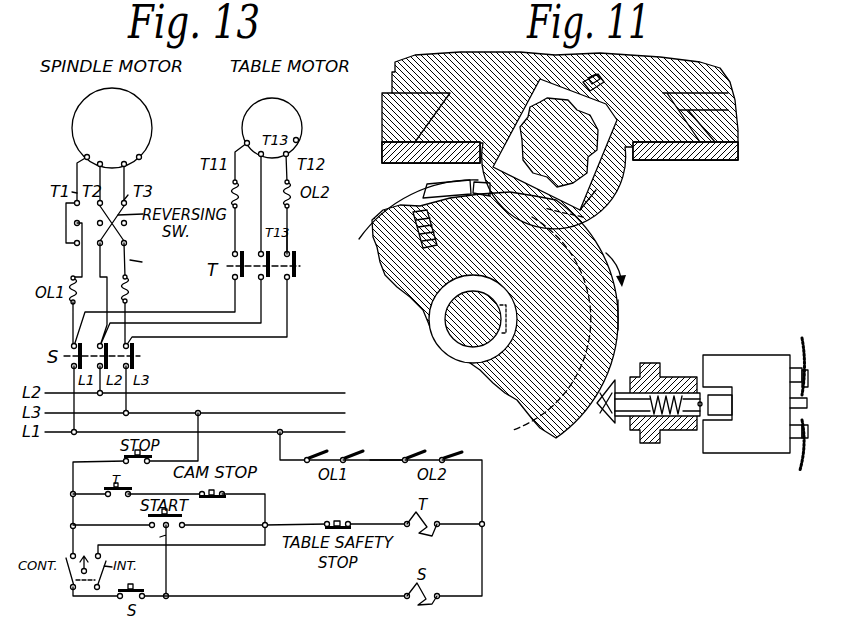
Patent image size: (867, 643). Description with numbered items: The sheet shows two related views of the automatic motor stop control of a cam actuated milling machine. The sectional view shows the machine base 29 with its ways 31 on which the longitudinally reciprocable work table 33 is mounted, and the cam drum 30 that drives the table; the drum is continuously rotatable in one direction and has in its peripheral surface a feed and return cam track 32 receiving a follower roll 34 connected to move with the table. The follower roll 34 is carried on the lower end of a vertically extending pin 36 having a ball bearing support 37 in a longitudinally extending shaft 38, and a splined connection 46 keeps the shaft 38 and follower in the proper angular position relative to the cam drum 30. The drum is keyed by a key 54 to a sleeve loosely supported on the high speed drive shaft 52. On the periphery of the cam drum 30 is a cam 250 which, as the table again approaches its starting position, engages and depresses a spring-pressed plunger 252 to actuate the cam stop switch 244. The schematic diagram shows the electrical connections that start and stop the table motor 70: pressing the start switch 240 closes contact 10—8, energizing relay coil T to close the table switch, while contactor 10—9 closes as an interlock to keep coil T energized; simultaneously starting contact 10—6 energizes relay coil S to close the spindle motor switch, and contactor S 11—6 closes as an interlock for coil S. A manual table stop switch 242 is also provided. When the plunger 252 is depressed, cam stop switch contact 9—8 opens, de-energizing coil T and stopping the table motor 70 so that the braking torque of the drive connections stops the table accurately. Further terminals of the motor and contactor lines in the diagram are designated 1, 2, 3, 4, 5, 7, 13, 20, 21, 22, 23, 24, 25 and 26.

In FIG. 13, the table motor 70 is at (258, 113).
In FIG. 13, the reversing switch contacts / spindle motor line 21 is at (163, 272).
In FIG. 13, the spindle motor line 23 is at (74, 224).
In FIG. 13, the spindle motor line 24 is at (148, 268).
In FIG. 13, the contactor line 20 is at (141, 311).
In FIG. 13, the contactor line / overload coil 22 is at (205, 304).
In FIG. 13, the table motor contactor line 25 is at (263, 252).
In FIG. 13, the table motor contactor line 26 is at (301, 239).
In FIG. 13, the manual table stop switch 242 is at (81, 463).
In FIG. 13, the stop switch terminal 3 is at (149, 457).
In FIG. 13, the contact terminal 10 is at (107, 487).
In FIG. 13, the contact terminal 9 is at (153, 487).
In FIG. 11, the contact terminal 9 is at (800, 462).
In FIG. 13, the cam stop switch 244 is at (215, 498).
In FIG. 11, the cam stop switch 244 is at (720, 403).
In FIG. 13, the contact terminal 8 is at (240, 516).
In FIG. 11, the contact terminal 8 is at (805, 345).
In FIG. 13, the start switch 240 is at (169, 530).
In FIG. 13, the contact terminal 6 is at (276, 572).
In FIG. 13, the contact terminal 11 is at (240, 600).
In FIG. 13, the overload contact line 1 is at (311, 448).
In FIG. 13, the overload contact line 2 is at (366, 453).
In FIG. 13, the overload line 13 is at (387, 453).
In FIG. 13, the overload contact line 4 is at (423, 453).
In FIG. 13, the control return line 5 is at (461, 531).
In FIG. 13, the table safety stop line 7 is at (395, 522).
In FIG. 11, the work table 33 is at (492, 66).
In FIG. 11, the base 29 is at (736, 152).
In FIG. 11, the ways 31 is at (438, 112).
In FIG. 11, the pin 36 is at (600, 73).
In FIG. 11, the ball bearing support 37 is at (512, 148).
In FIG. 11, the shaft 38 is at (568, 140).
In FIG. 11, the splined connection 46 is at (588, 182).
In FIG. 11, the follower roll 34 is at (583, 217).
In FIG. 11, the cam drum 30 is at (407, 288).
In FIG. 11, the cam 250 is at (470, 185).
In FIG. 11, the key 54 is at (474, 357).
In FIG. 11, the high speed drive shaft 52 is at (475, 321).
In FIG. 11, the feed and return cam track 32 is at (612, 319).
In FIG. 11, the spring-pressed plunger 252 is at (610, 404).